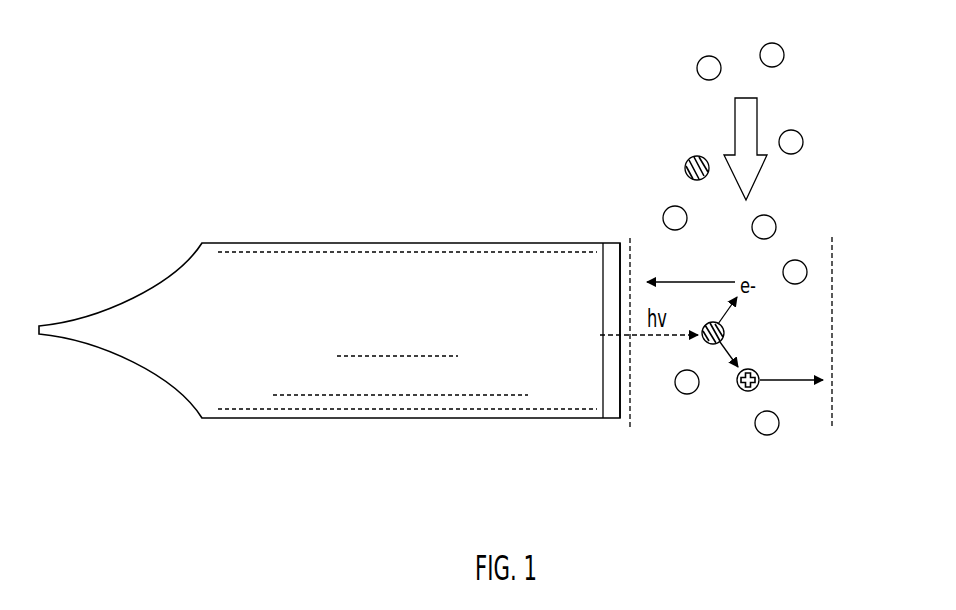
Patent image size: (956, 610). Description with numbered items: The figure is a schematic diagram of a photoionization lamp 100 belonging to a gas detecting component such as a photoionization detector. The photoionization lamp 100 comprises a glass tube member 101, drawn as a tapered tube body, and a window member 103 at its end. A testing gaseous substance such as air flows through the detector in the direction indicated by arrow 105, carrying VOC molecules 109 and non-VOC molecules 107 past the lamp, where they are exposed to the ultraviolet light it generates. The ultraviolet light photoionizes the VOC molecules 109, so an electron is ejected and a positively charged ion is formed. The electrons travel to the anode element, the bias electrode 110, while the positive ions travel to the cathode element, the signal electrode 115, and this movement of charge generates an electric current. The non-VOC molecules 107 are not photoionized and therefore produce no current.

The photoionization lamp 100 is at (102, 315).
The glass tube member 101 is at (233, 243).
The window member 103 is at (610, 242).
The arrow 105 is at (733, 135).
The non-VOC molecules 107 is at (708, 57).
The VOC molecules 109 is at (685, 172).
The bias electrode 110 is at (628, 427).
The signal electrode 115 is at (832, 427).